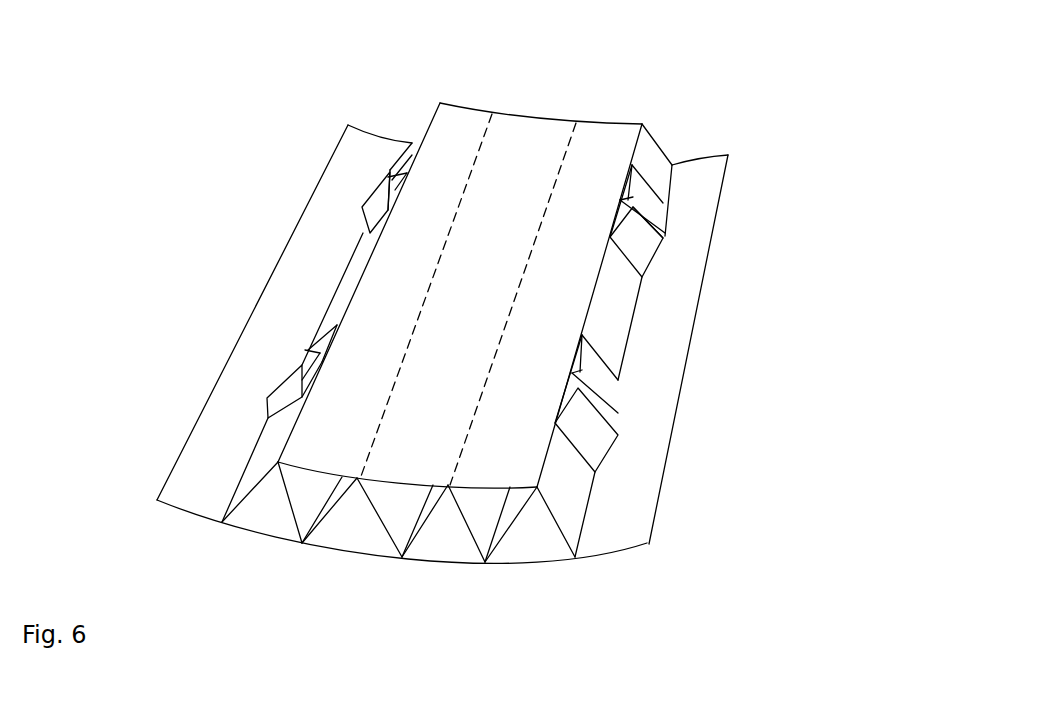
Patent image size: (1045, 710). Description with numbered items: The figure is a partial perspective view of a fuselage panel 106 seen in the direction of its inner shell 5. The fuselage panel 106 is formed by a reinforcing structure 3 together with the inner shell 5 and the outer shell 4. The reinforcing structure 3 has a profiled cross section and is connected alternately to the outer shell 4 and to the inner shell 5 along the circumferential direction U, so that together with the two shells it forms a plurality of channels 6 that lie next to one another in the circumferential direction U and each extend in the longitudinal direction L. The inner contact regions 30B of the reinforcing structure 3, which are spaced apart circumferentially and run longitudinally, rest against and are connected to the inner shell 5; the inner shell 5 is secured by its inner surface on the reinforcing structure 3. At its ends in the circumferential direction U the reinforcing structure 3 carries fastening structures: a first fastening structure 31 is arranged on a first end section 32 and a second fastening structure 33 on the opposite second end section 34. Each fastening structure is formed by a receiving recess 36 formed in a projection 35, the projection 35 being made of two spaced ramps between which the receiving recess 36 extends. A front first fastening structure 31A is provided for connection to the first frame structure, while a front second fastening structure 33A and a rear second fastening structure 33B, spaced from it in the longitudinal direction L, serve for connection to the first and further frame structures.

The fuselage panel 106 is at (675, 43).
The inner shell 5 is at (462, 119).
The longitudinal direction L is at (500, 200).
The circumferential direction U is at (333, 591).
The inner contact region 30B is at (475, 413).
The reinforcing structure 3 is at (510, 533).
The outer shell 4 is at (188, 515).
The channel 6 is at (448, 550).
The first fastening structure 31 is at (698, 320).
The front first fastening structure 31A is at (683, 225).
The first end section 32 is at (570, 503).
The second fastening structure 33 is at (250, 261).
The front second fastening structure 33A is at (265, 380).
The rear second fastening structure 33B is at (350, 205).
The second end section 34 is at (262, 449).
The projection 35 is at (620, 395).
The receiving recess 36 is at (613, 415).